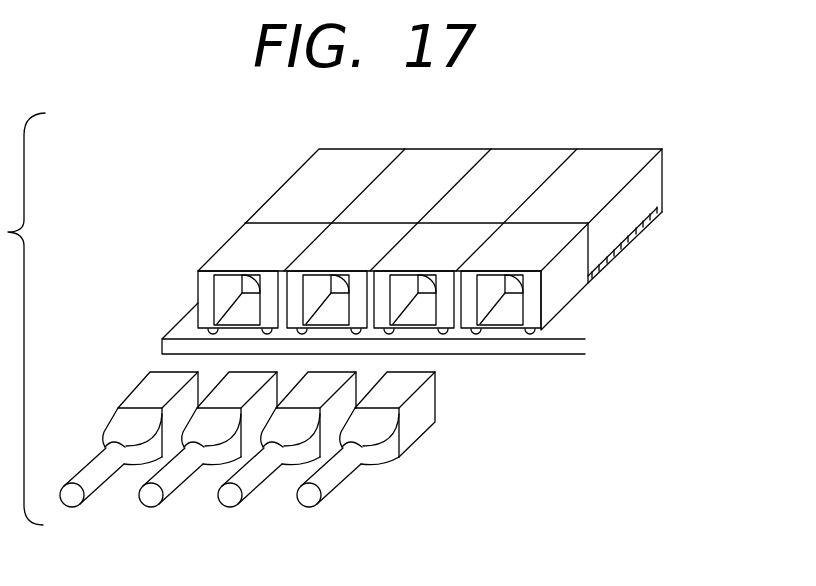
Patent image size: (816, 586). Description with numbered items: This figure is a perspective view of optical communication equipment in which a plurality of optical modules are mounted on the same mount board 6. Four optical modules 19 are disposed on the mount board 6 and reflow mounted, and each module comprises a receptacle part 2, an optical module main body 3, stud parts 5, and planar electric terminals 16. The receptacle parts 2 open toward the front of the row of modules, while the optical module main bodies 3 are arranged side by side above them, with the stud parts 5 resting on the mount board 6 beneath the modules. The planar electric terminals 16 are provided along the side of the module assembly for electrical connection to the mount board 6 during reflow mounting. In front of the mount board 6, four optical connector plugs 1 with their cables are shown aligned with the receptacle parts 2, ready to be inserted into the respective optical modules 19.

The optical connector plug 1 is at (418, 427).
The receptacle part 2 is at (232, 245).
The optical module main body 3 is at (290, 183).
The stud parts 5 is at (526, 335).
The mount board 6 is at (181, 323).
The planar electric terminals 16 is at (601, 280).
The optical module 19 is at (446, 268).